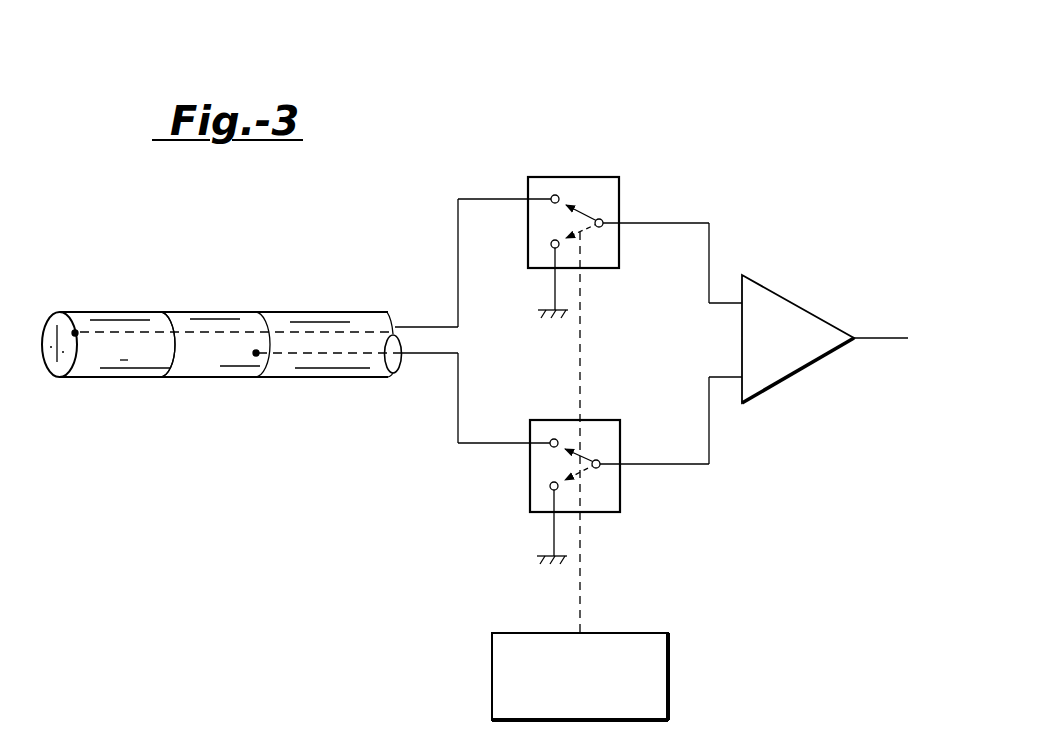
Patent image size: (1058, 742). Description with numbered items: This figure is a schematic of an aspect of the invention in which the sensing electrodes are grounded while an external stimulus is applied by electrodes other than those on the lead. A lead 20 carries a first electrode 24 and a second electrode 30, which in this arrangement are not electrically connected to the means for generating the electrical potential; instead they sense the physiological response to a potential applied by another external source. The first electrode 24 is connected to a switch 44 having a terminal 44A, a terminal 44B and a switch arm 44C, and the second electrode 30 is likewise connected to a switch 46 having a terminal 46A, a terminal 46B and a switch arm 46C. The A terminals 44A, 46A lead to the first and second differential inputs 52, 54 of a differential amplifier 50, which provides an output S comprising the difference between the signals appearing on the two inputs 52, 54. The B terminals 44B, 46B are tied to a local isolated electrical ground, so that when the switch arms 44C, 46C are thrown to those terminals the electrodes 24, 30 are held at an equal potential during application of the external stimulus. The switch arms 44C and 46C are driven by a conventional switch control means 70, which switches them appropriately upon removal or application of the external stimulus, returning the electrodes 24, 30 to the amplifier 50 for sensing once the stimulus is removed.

The lead 20 is at (297, 298).
The first electrode 24 is at (62, 313).
The second electrode 30 is at (222, 309).
The switch 44 is at (581, 376).
The terminal of switch 44A is at (553, 196).
The terminal of switch 44B is at (551, 243).
The switch arm 44C is at (568, 206).
The switch 46 is at (583, 468).
The terminal of switch 46A is at (552, 440).
The terminal of switch 46B is at (550, 485).
The switch arm 46C is at (584, 458).
The differential amplifier 50 is at (797, 375).
The first differential input 52 is at (709, 222).
The second differential input 54 is at (709, 465).
The switch control means 70 is at (668, 633).